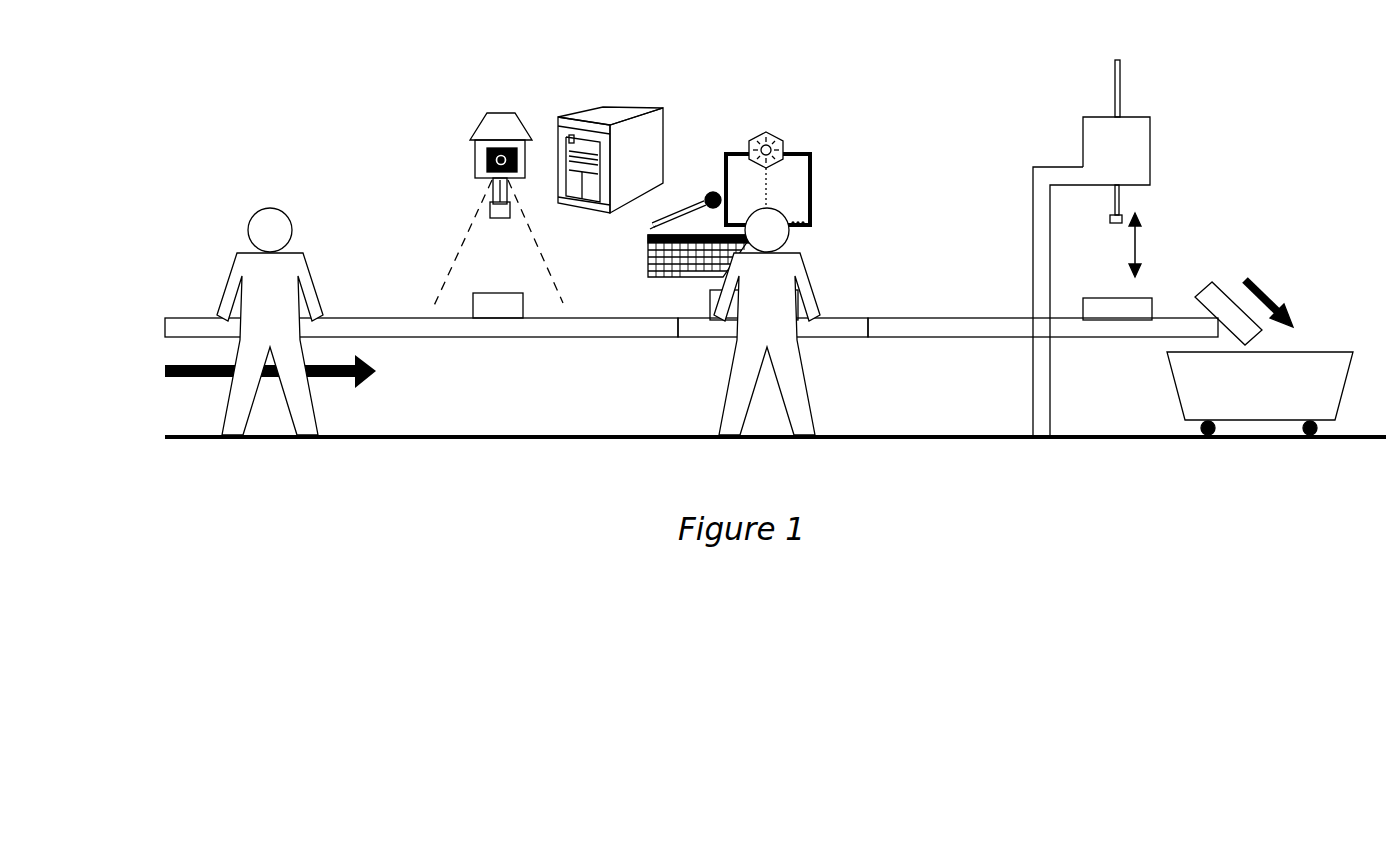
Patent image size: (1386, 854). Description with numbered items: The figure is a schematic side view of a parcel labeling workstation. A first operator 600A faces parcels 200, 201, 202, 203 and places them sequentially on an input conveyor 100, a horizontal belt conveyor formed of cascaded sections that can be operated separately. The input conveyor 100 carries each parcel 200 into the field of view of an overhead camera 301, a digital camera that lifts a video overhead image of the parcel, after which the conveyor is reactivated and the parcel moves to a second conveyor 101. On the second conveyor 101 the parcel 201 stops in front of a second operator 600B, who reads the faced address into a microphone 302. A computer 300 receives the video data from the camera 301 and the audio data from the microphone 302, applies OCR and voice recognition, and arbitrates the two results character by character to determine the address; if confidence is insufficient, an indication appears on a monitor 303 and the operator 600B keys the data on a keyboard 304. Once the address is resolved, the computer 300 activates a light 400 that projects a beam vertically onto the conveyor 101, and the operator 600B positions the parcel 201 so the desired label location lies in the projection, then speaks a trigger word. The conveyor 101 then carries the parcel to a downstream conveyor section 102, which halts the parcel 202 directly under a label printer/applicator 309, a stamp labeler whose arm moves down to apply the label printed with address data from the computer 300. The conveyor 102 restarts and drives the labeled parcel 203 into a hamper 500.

The input conveyor 100 is at (190, 318).
The second conveyor 101 is at (858, 318).
The downstream conveyor section 102 is at (990, 338).
The parcel 200 is at (473, 293).
The parcel 201 is at (797, 300).
The parcel 202 is at (1143, 298).
The parcel 203 is at (1225, 280).
The computer 300 is at (603, 108).
The overhead camera 301 is at (470, 138).
The microphone 302 is at (700, 195).
The monitor 303 is at (812, 152).
The keyboard 304 is at (648, 261).
The label printer/applicator 309 is at (1130, 117).
The light 400 is at (766, 130).
The hamper 500 is at (1318, 352).
The operator 600A is at (235, 388).
The operator 600B is at (733, 363).